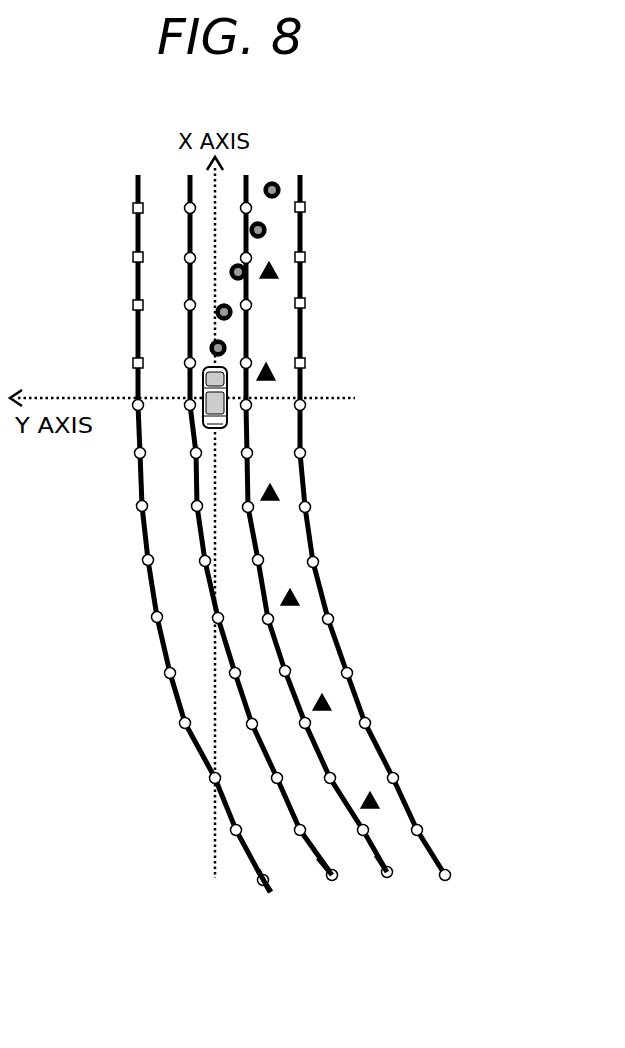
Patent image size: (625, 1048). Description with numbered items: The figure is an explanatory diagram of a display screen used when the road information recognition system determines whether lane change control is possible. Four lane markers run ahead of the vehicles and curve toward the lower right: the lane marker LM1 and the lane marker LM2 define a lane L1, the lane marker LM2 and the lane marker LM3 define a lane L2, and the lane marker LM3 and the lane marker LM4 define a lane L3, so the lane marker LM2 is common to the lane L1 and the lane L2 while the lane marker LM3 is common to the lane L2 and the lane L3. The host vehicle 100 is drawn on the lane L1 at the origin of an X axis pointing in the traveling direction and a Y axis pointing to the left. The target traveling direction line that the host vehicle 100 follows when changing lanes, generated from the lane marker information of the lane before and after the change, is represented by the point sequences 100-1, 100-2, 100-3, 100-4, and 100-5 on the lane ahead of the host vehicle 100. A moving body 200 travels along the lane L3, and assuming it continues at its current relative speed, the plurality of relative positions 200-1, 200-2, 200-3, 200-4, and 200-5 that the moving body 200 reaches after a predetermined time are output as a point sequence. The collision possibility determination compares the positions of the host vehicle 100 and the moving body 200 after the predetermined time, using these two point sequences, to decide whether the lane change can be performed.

The host vehicle 100 is at (205, 393).
The position point sequence of target traveling direction line 100-1 is at (210, 346).
The position point sequence of target traveling direction line 100-2 is at (216, 310).
The position point sequence of target traveling direction line 100-3 is at (230, 270).
The position point sequence of target traveling direction line 100-4 is at (250, 226).
The position point sequence of target traveling direction line 100-5 is at (280, 188).
The moving body 200 is at (380, 802).
The relative position of moving body 200-1 is at (332, 704).
The relative position of moving body 200-2 is at (300, 598).
The relative position of moving body 200-3 is at (281, 494).
The relative position of moving body 200-4 is at (276, 375).
The relative position of moving body 200-5 is at (278, 274).
The lane marker LM1 is at (138, 516).
The lane marker LM2 is at (210, 602).
The lane marker LM3 is at (292, 687).
The lane marker LM4 is at (378, 750).
The lane L1 is at (280, 874).
The lane L2 is at (342, 868).
The lane L3 is at (399, 867).